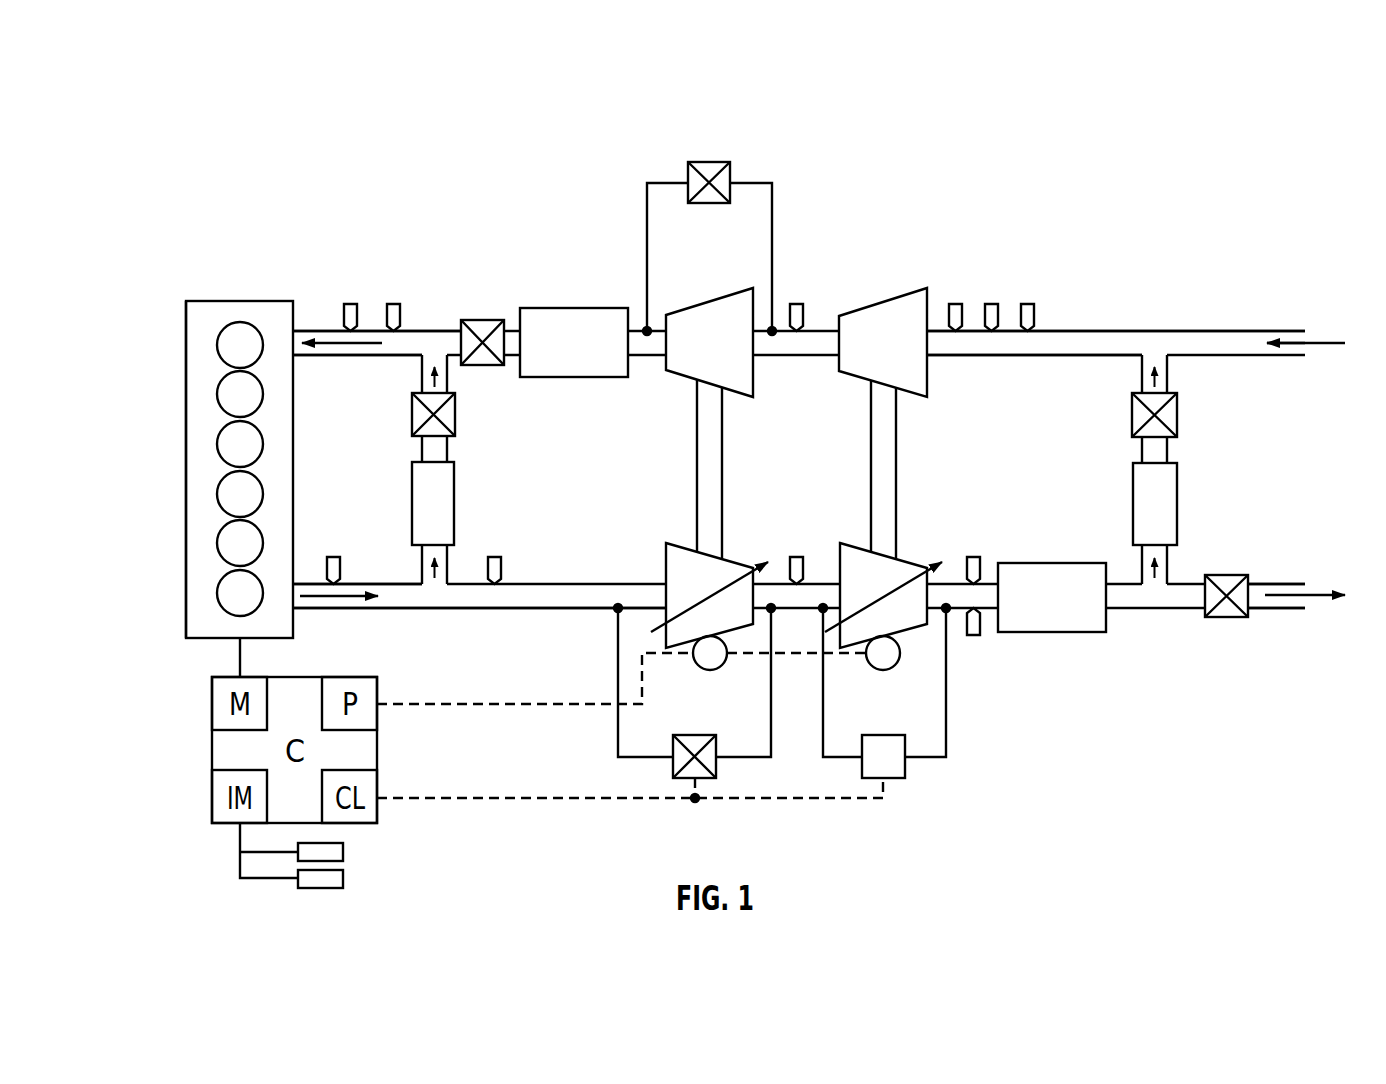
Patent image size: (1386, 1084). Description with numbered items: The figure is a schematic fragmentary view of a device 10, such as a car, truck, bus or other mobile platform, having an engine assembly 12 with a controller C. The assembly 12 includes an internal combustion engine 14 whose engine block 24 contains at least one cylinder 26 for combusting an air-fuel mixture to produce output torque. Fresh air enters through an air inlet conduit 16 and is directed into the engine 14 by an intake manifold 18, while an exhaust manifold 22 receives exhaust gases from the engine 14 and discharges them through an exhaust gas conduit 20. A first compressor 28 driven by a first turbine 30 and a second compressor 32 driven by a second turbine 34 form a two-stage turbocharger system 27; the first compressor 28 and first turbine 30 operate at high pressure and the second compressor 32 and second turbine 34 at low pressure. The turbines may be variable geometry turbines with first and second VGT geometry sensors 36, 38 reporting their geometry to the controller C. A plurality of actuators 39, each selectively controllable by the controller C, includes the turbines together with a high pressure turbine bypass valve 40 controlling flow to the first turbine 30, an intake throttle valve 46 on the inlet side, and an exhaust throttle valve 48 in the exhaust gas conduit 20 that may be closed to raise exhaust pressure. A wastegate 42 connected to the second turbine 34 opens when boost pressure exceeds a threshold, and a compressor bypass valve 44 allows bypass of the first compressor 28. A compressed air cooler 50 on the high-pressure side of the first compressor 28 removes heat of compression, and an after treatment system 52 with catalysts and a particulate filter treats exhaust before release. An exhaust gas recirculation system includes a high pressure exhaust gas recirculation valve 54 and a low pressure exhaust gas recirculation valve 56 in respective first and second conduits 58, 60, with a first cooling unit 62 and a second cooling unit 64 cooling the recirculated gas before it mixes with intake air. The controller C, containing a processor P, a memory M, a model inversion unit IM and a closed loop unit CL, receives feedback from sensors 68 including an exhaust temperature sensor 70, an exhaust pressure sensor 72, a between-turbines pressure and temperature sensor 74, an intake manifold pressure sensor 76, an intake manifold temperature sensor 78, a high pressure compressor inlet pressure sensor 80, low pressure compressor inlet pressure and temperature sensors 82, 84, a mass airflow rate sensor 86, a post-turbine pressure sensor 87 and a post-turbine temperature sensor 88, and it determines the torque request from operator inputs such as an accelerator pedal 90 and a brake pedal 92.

The device 10 is at (308, 180).
The engine assembly 12 is at (993, 203).
The internal combustion engine 14 is at (211, 462).
The air inlet conduit 16 is at (1195, 331).
The intake manifold 18 is at (446, 340).
The exhaust gas conduit 20 is at (1265, 608).
The exhaust manifold 22 is at (563, 608).
The engine block 24 is at (186, 352).
The cylinder 26 is at (240, 322).
The two-stage turbocharger system 27 is at (744, 213).
The first compressor 28 is at (710, 301).
The first turbine 30 is at (666, 555).
The second compressor 32 is at (882, 296).
The second turbine 34 is at (910, 629).
The first VGT geometry sensor 36 is at (710, 670).
The second VGT geometry sensor 38 is at (883, 670).
The plurality of actuators 39 is at (1012, 598).
The high pressure turbine bypass valve 40 is at (716, 762).
The wastegate 42 is at (905, 762).
The compressor bypass valve 44 is at (710, 162).
The intake throttle valve 46 is at (482, 320).
The exhaust throttle valve 48 is at (1225, 617).
The compressed air cooler 50 is at (573, 308).
The after treatment system 52 is at (1055, 563).
The high pressure exhaust gas recirculation valve 54 is at (412, 413).
The low pressure exhaust gas recirculation valve 56 is at (1177, 420).
The first conduit 58 is at (422, 450).
The second conduit 60 is at (1167, 445).
The first cooling unit 62 is at (412, 500).
The second cooling unit 64 is at (1177, 505).
The sensors 68 is at (1047, 269).
The exhaust temperature sensor 70 is at (333, 557).
The exhaust pressure sensor 72 is at (495, 557).
The between-turbines pressure and temperature sensor 74 is at (797, 557).
The intake manifold pressure sensor 76 is at (350, 304).
The intake manifold temperature sensor 78 is at (393, 304).
The high pressure compressor inlet pressure sensor 80 is at (797, 303).
The low pressure compressor inlet pressure sensor 82 is at (956, 304).
The low pressure compressor inlet temperature sensor 84 is at (992, 304).
The mass airflow rate sensor 86 is at (1028, 304).
The post-turbine pressure sensor 87 is at (973, 557).
The post-turbine temperature sensor 88 is at (973, 635).
The accelerator pedal 90 is at (343, 852).
The brake pedal 92 is at (343, 879).